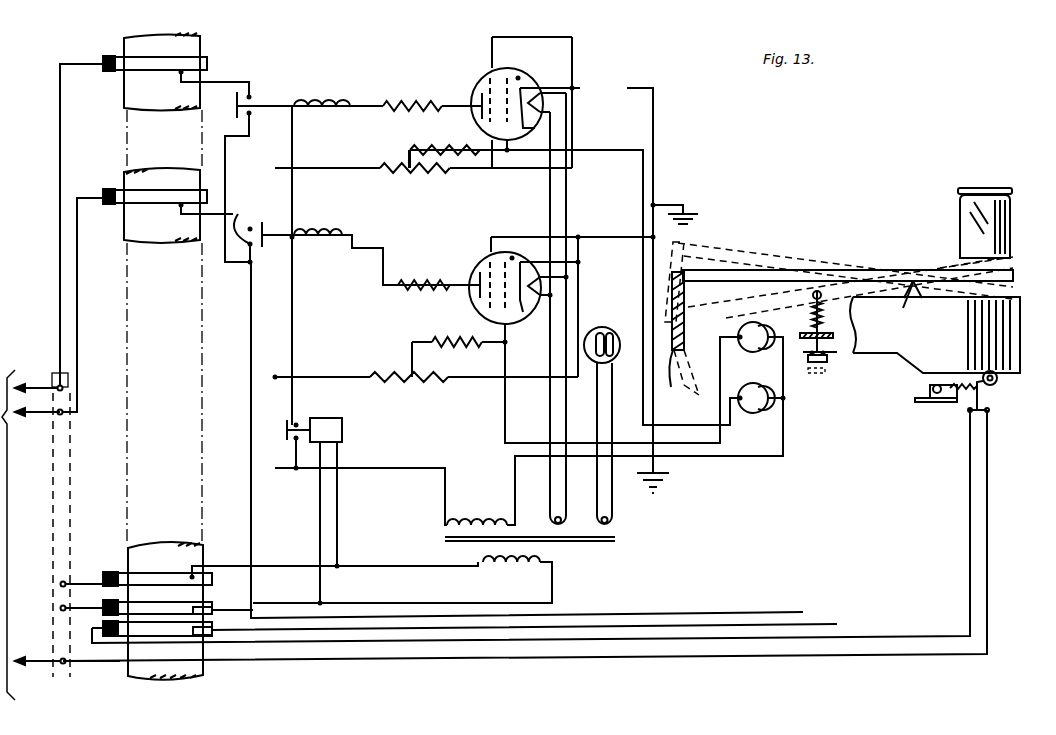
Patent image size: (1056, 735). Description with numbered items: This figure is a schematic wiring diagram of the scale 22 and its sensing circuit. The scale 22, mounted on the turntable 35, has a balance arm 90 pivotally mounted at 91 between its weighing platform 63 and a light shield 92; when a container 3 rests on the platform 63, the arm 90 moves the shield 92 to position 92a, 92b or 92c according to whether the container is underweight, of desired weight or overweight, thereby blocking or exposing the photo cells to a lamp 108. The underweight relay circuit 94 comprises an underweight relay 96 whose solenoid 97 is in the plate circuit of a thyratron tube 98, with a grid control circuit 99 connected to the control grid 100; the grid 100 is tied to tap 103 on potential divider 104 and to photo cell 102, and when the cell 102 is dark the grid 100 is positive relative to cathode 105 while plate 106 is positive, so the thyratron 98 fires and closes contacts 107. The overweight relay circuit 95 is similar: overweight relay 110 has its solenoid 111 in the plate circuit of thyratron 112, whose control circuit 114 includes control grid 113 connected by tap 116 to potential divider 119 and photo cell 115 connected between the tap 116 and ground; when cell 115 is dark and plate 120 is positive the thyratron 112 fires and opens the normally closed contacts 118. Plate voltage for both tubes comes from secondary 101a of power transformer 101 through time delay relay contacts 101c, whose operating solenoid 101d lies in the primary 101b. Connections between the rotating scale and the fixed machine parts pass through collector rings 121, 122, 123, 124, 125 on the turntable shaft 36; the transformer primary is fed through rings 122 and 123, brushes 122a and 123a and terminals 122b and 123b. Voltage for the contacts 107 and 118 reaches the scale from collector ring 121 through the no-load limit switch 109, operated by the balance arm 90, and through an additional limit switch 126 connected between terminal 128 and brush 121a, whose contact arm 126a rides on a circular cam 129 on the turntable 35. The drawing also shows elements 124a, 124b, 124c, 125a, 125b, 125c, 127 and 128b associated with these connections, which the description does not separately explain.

The container 3 is at (963, 216).
The scale 22 is at (910, 277).
The turntable 35 is at (1012, 305).
The turntable shaft 36 is at (135, 350).
The weighing platform 63 is at (952, 262).
The balance arm 90 is at (770, 270).
The pivot 91 is at (899, 306).
The light shield 92 is at (672, 297).
The underweight position of light shield 92a is at (848, 336).
The desired-weight position of light shield 92b is at (670, 377).
The overweight position of light shield 92c is at (700, 250).
The underweight relay circuit 94 is at (430, 102).
The overweight relay circuit 95 is at (445, 280).
The underweight relay 96 is at (298, 100).
The solenoid 97 is at (354, 104).
The thyratron tube 98 is at (510, 68).
The thyratron grid control circuit 99 is at (410, 172).
The control grid 100 is at (500, 148).
The power transformer 101 is at (570, 542).
The secondary 101a is at (490, 506).
The primary 101b is at (532, 566).
The time delay relay contacts 101c is at (297, 422).
The operating solenoid 101d is at (354, 410).
The photo cell 102 is at (764, 410).
The tap 103 is at (408, 152).
The potential divider 104 is at (432, 174).
The thyratron cathode 105 is at (537, 86).
The thyratron plate 106 is at (487, 96).
The contacts 107 is at (251, 96).
The lamp 108 is at (606, 324).
The no-load limit switch 109 is at (827, 366).
The overweight relay 110 is at (290, 232).
The solenoid 111 is at (346, 232).
The thyratron 112 is at (512, 256).
The control grid 113 is at (507, 342).
The thyratron control circuit 114 is at (436, 385).
The photo cell 115 is at (745, 350).
The tap 116 is at (412, 356).
The contacts 118 is at (240, 213).
The potential divider 119 is at (410, 384).
The thyratron plate 120 is at (478, 292).
The collector ring 121 is at (213, 636).
The brush 121a is at (110, 638).
The collector ring 122 is at (214, 606).
The brush 122a is at (128, 602).
The terminal 122b is at (60, 608).
The collector ring 123 is at (212, 578).
The brush 123a is at (106, 571).
The terminal 123b is at (66, 582).
The collector ring 124 is at (135, 200).
The contact 124a is at (108, 190).
The terminal 124b is at (64, 412).
The lead 124c is at (46, 414).
The collector ring 125 is at (205, 62).
The contact 125a is at (108, 57).
The terminal 125b is at (64, 389).
The terminal block 125c is at (50, 378).
The limit switch 126 is at (924, 404).
The contact arm 126a is at (986, 398).
The leads 127 is at (968, 414).
The terminal 128 is at (66, 665).
The terminal 128b is at (60, 663).
The circular cam 129 is at (997, 378).